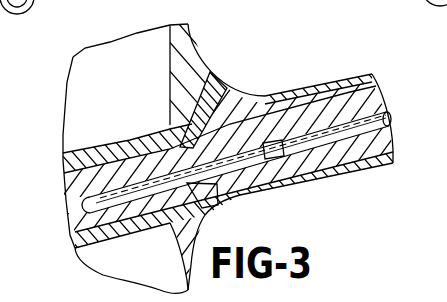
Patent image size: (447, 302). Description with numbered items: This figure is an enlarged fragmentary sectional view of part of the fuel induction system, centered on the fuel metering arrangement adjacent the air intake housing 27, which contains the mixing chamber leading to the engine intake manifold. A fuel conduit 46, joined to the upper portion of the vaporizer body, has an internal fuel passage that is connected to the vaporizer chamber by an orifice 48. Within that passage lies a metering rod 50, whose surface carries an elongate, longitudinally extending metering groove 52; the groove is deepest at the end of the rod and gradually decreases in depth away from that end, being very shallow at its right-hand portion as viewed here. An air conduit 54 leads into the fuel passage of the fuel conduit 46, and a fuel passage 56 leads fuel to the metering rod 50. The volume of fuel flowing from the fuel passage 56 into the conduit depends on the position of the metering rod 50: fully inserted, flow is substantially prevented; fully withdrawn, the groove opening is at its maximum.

The air intake housing 27 is at (188, 25).
The fuel conduit 46 is at (117, 142).
The orifice 48 is at (68, 222).
The metering rod 50 is at (388, 108).
The metering groove 52 is at (84, 203).
The air conduit 54 is at (212, 78).
The fuel passage 56 is at (272, 170).